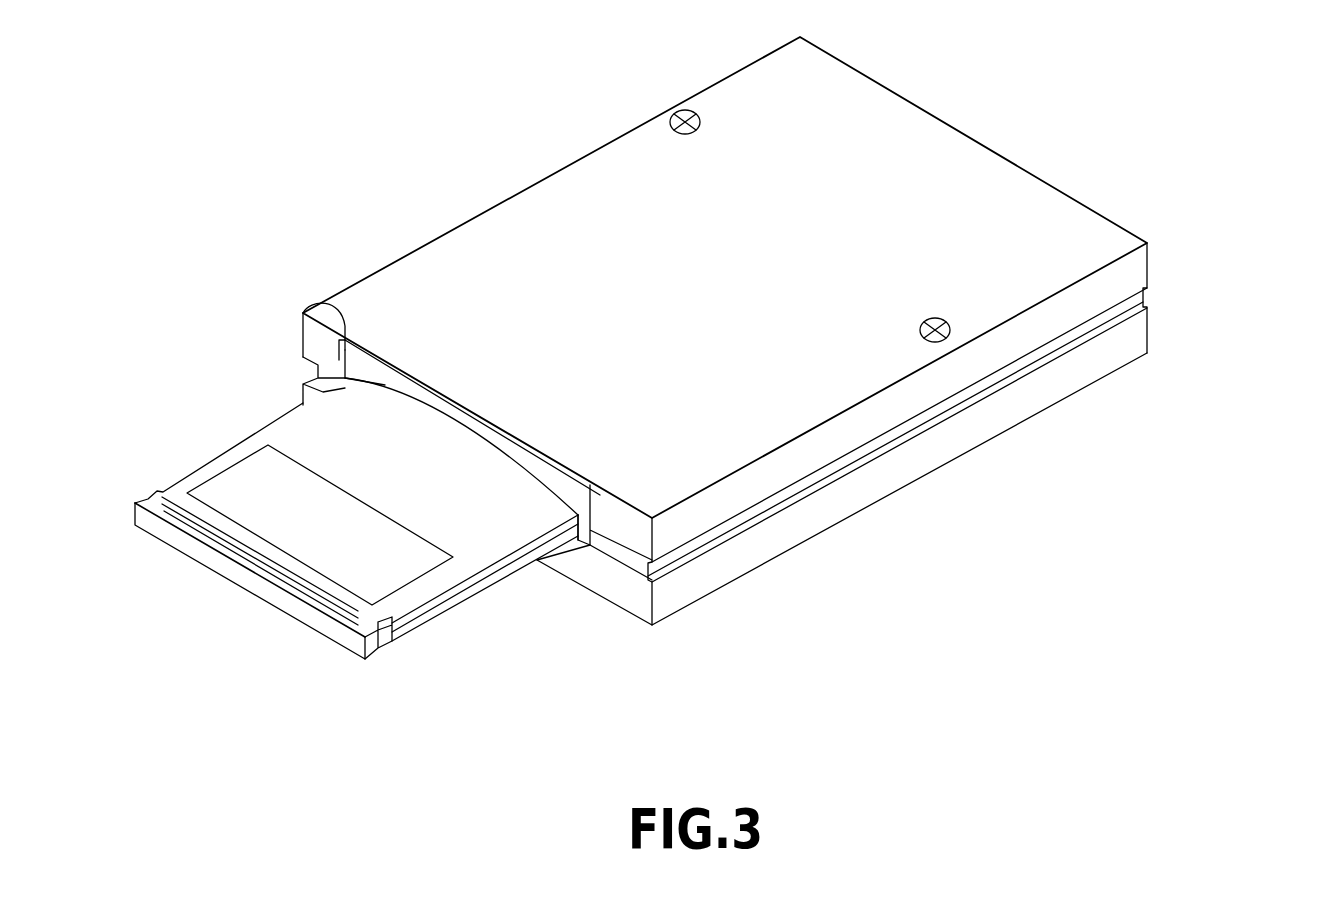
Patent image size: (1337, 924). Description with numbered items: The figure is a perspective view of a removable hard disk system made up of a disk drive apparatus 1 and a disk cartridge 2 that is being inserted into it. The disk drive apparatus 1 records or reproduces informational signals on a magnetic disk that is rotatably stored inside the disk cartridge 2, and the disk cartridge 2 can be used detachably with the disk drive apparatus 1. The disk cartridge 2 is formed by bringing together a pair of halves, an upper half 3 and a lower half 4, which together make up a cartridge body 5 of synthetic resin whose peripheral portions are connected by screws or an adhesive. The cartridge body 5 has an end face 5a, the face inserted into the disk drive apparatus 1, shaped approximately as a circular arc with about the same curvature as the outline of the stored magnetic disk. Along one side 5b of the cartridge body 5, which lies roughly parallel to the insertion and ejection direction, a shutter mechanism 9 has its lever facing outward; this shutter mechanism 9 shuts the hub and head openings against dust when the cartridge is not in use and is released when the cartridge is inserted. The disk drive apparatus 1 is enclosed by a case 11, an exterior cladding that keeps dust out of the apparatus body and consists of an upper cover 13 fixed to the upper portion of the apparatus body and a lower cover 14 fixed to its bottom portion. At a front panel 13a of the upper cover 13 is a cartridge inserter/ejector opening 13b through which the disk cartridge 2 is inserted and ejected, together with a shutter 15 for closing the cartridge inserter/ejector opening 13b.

The disk drive apparatus 1 is at (496, 157).
The disk cartridge 2 is at (165, 456).
The upper half 3 is at (540, 520).
The lower half 4 is at (515, 575).
The cartridge body 5 is at (593, 650).
The end face 5a is at (323, 388).
The side of cartridge body 5b is at (441, 609).
The shutter mechanism 9 is at (467, 590).
The case 11 is at (1262, 237).
The upper cover 13 is at (1133, 270).
The front panel 13a is at (637, 537).
The cartridge inserter/ejector opening 13b is at (323, 307).
The lower cover 14 is at (1138, 333).
The shutter 15 is at (377, 373).